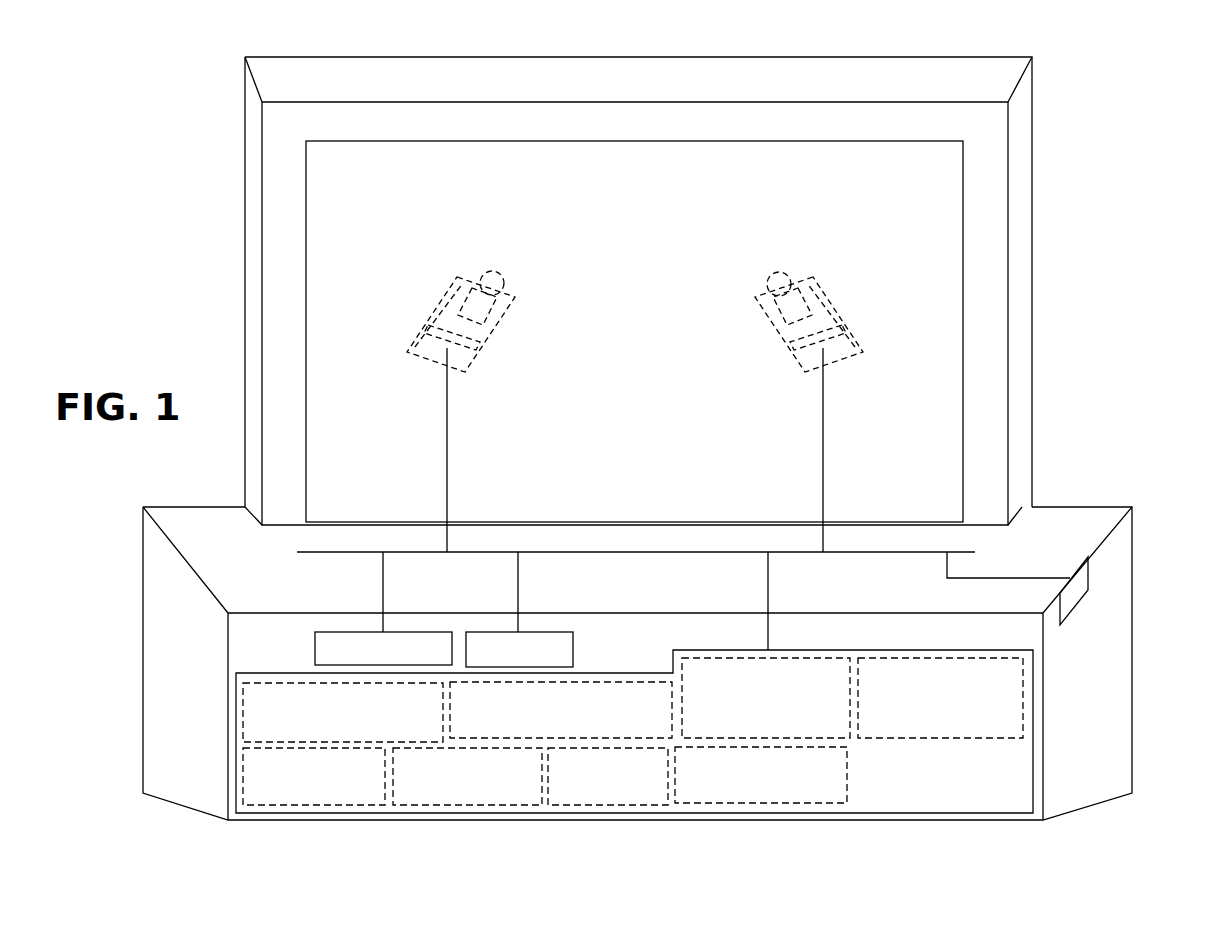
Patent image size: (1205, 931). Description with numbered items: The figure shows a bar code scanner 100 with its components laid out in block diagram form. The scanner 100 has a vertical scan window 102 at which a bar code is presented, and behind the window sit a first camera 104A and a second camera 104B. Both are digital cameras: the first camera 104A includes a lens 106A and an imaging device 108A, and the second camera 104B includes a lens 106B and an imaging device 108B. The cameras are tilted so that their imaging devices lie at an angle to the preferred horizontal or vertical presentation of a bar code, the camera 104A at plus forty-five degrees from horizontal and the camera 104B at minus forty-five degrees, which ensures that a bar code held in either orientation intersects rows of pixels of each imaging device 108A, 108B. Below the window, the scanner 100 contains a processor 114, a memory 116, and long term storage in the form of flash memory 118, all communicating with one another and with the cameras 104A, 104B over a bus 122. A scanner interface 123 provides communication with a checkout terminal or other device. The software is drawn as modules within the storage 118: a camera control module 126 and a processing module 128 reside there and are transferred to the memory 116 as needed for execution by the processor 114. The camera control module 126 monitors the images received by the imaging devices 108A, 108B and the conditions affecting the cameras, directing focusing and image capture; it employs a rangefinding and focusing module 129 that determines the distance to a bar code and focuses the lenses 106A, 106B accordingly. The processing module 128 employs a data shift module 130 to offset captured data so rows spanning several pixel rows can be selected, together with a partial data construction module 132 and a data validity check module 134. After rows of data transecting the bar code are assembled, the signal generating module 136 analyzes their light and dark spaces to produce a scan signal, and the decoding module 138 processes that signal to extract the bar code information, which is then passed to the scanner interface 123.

The bar code scanner 100 is at (130, 128).
The vertical scan window 102 is at (345, 140).
The first camera 104A is at (432, 358).
The second camera 104B is at (835, 362).
The lens 106A is at (491, 270).
The lens 106B is at (780, 270).
The imaging device 108A is at (500, 333).
The imaging device 108B is at (770, 327).
The processor 114 is at (340, 632).
The memory 116 is at (482, 632).
The flash memory 118 is at (1045, 768).
The bus 122 is at (672, 555).
The scanner interface 123 is at (1080, 600).
The camera control module 126 is at (300, 683).
The processing module 128 is at (318, 805).
The rangefinding and focusing module 129 is at (948, 660).
The data shift module 130 is at (463, 805).
The partial data construction module 132 is at (797, 658).
The data validity check module 134 is at (760, 805).
The signal generating module 136 is at (590, 680).
The decoding module 138 is at (612, 805).